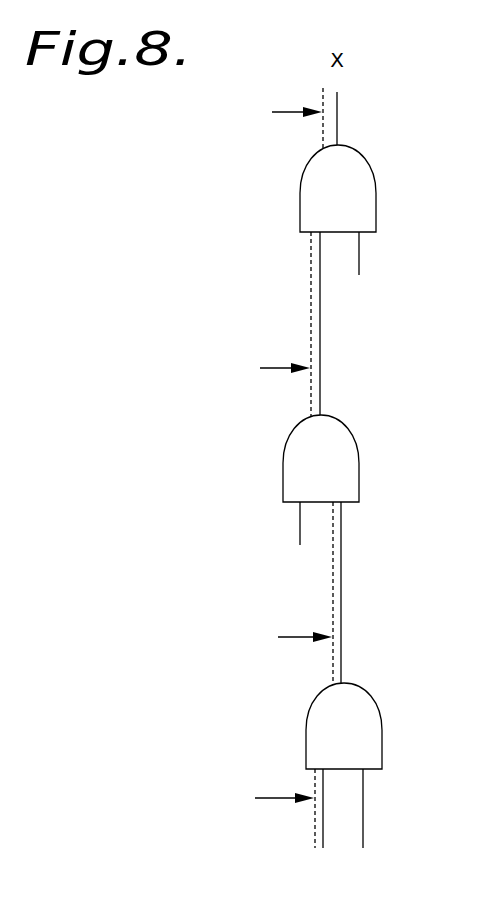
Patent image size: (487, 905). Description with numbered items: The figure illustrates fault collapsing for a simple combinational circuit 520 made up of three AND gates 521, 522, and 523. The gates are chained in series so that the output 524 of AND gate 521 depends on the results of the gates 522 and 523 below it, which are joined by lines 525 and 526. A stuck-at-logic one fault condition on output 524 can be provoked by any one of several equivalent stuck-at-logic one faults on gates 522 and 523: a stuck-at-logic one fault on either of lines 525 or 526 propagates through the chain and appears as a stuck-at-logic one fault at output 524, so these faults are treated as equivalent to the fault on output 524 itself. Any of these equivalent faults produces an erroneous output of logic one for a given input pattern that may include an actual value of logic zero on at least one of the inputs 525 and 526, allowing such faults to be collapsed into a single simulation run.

The combinational circuit 520 is at (234, 460).
The AND gate 521 is at (376, 207).
The AND gate 522 is at (350, 437).
The AND gate 523 is at (378, 705).
The output 524 is at (337, 120).
The line 525 is at (320, 337).
The line 526 is at (341, 603).